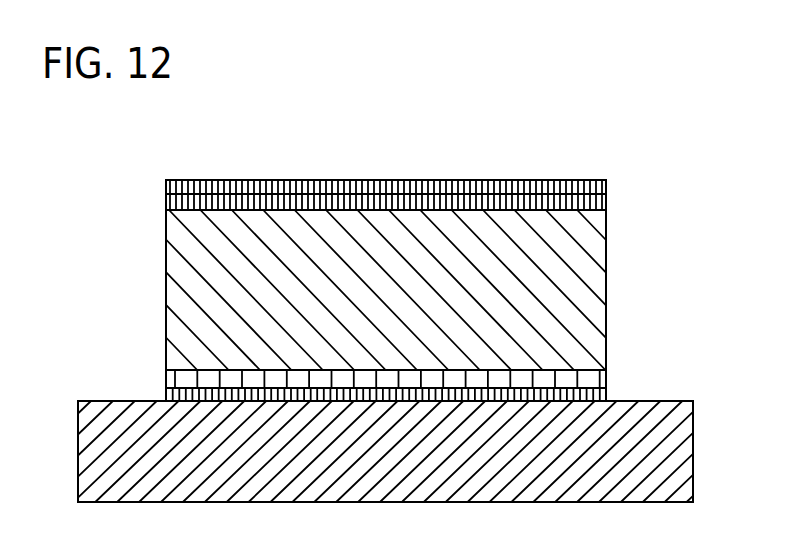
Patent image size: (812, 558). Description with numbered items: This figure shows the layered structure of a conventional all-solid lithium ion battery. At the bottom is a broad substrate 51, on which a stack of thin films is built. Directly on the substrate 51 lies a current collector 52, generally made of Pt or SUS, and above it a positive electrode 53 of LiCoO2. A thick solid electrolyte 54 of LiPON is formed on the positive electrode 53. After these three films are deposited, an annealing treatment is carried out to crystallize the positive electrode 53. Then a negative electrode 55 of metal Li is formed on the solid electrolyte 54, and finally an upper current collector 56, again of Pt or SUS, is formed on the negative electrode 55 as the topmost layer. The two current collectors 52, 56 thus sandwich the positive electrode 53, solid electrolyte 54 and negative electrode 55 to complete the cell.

The substrate 51 is at (682, 465).
The current collector 52 is at (607, 394).
The positive electrode 53 is at (607, 380).
The solid electrolyte 54 is at (607, 282).
The negative electrode 55 is at (607, 202).
The current collector 56 is at (607, 190).